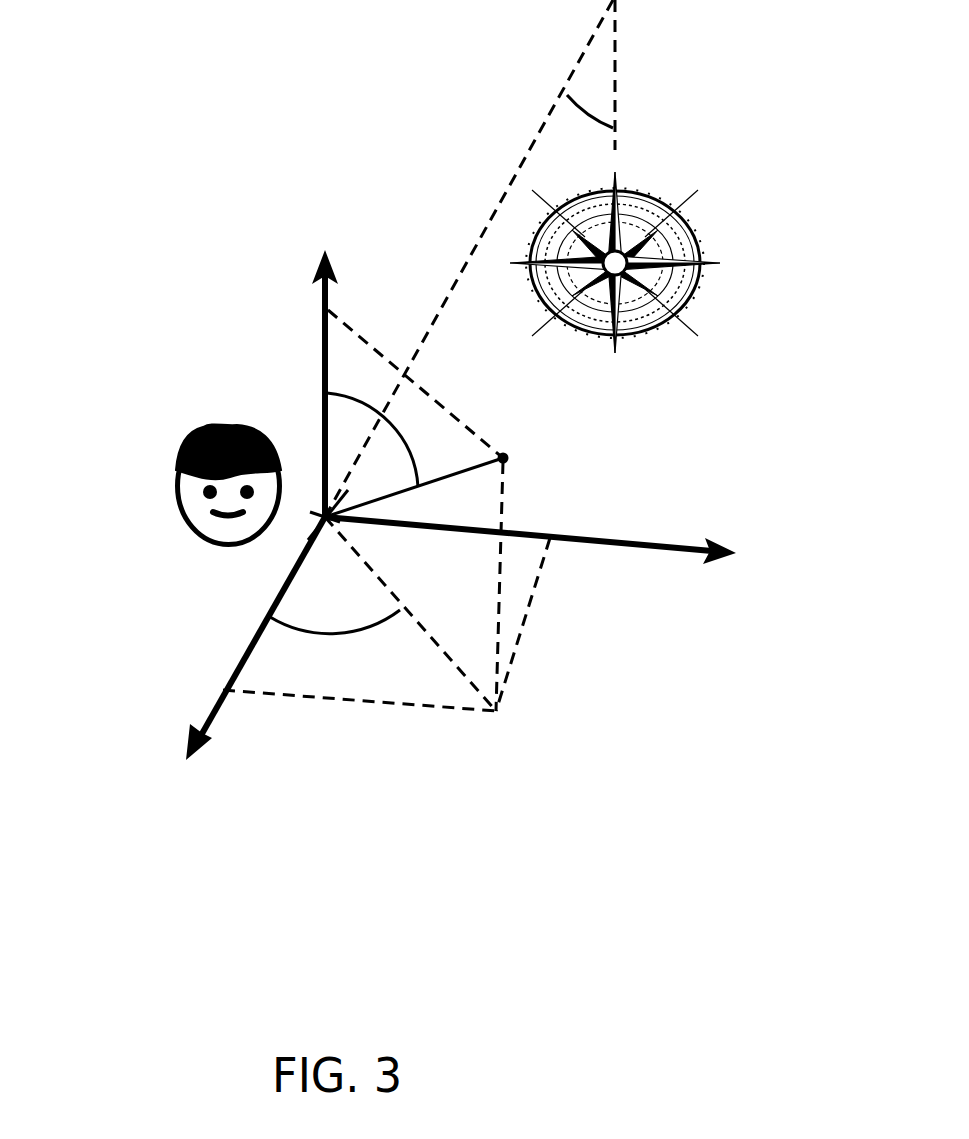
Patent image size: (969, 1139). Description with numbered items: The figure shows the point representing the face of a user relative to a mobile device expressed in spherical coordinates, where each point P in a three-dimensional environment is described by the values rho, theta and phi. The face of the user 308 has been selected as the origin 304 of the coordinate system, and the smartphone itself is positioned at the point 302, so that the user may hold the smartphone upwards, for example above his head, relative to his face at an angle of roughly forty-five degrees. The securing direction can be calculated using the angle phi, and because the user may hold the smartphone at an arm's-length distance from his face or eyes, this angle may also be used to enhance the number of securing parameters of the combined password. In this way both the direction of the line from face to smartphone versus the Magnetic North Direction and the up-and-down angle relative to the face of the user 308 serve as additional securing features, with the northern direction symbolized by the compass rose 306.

The point 302 is at (527, 442).
The origin 304 is at (313, 500).
The compass rose 306 is at (505, 220).
The user 308 is at (158, 495).